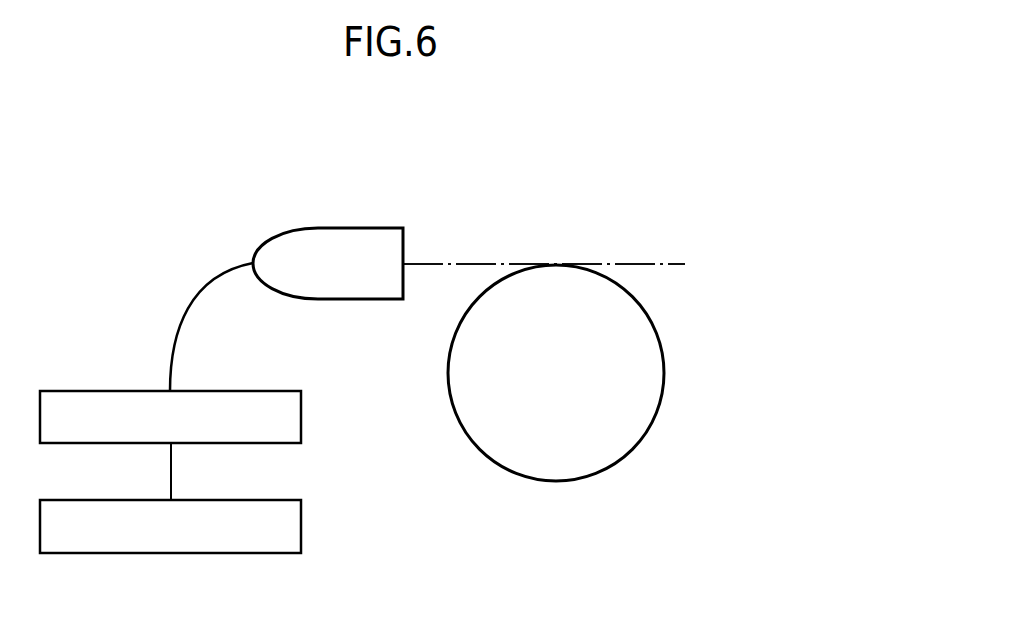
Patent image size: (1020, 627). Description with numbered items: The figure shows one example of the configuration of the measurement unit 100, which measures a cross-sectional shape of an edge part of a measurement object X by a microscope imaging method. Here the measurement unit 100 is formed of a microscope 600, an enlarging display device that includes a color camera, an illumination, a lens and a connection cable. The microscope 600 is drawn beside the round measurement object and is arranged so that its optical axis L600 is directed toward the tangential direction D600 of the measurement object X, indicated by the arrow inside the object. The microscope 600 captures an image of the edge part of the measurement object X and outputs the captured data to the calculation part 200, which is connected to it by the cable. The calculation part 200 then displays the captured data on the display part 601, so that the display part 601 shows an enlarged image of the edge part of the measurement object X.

The measurement unit 100 is at (420, 143).
The microscope 600 is at (360, 228).
The optical axis L600 is at (472, 263).
The tangential direction D600 is at (594, 374).
The calculation part 200 is at (250, 391).
The display part 601 is at (250, 500).